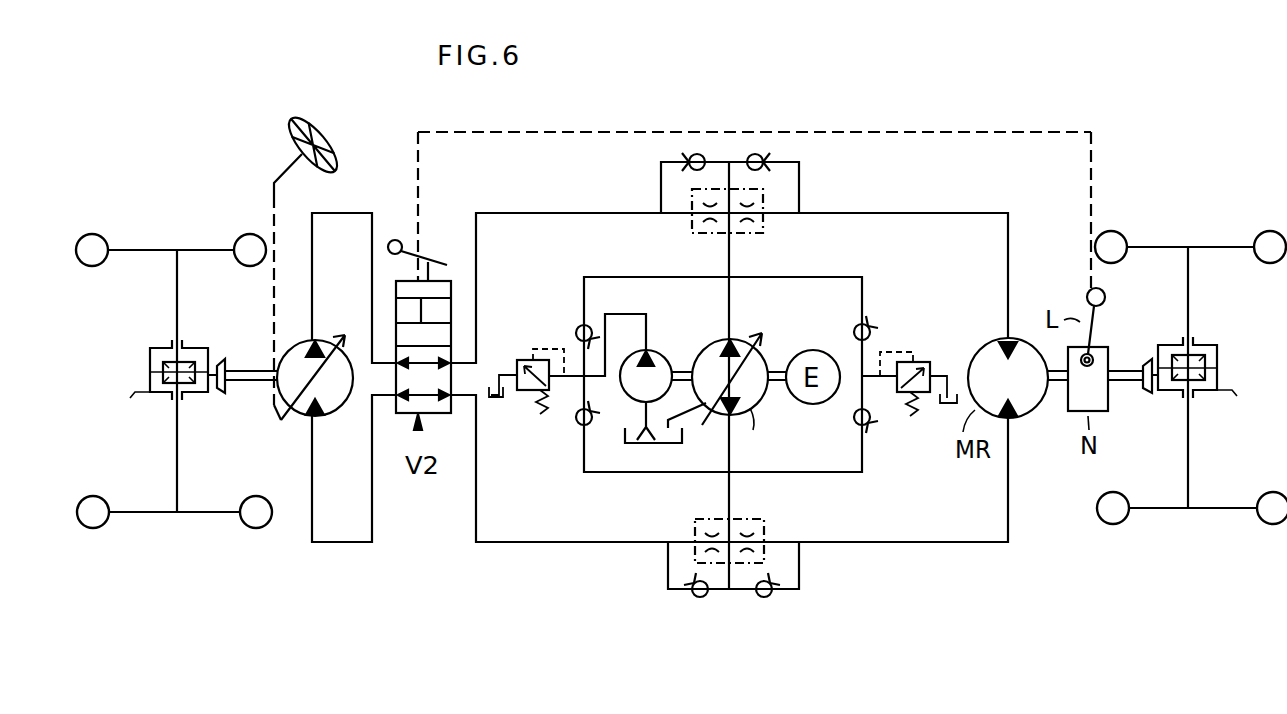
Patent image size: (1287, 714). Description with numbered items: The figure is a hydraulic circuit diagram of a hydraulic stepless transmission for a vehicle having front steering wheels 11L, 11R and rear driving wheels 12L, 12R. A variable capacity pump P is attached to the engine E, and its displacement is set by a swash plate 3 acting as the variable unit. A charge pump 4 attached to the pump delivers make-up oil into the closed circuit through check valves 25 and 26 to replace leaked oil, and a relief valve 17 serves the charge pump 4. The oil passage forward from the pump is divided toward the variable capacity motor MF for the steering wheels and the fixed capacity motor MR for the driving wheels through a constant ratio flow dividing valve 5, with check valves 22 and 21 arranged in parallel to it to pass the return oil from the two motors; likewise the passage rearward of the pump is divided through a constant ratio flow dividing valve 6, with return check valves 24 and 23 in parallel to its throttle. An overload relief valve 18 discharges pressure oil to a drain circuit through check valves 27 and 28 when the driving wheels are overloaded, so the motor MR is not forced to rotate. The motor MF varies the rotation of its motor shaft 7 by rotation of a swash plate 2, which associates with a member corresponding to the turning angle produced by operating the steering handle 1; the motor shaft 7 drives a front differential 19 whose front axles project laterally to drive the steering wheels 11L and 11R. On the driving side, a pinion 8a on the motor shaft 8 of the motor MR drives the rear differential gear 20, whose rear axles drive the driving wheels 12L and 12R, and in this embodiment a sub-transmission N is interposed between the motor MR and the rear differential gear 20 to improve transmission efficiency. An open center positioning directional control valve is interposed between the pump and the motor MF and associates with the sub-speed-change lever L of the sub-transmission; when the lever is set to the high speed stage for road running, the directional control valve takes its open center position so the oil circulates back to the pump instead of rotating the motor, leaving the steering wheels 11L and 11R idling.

The steering handle 1 is at (331, 140).
The swash plate 2 is at (346, 333).
The swash plate 3 is at (750, 336).
The charge pump 4 is at (666, 358).
The constant ratio flow dividing valve 5 is at (757, 235).
The constant ratio flow dividing valve 6 is at (764, 521).
The motor shaft 7 is at (221, 366).
The motor shaft 8 is at (1126, 388).
The pinion 8a is at (1148, 362).
The steering wheel 11R is at (166, 237).
The steering wheel 11L is at (173, 514).
The driving wheel 12R is at (1168, 247).
The driving wheel 12L is at (1172, 510).
The relief valve 17 is at (521, 360).
The overload relief valve 18 is at (927, 362).
The front differential 19 is at (143, 355).
The rear differential gear 20 is at (1220, 367).
The check valve 21 is at (765, 157).
The check valve 22 is at (686, 157).
The return check valve 23 is at (767, 598).
The return check valve 24 is at (700, 598).
The check valve 25 is at (578, 324).
The check valve 26 is at (579, 426).
The check valve 27 is at (871, 326).
The check valve 28 is at (870, 426).